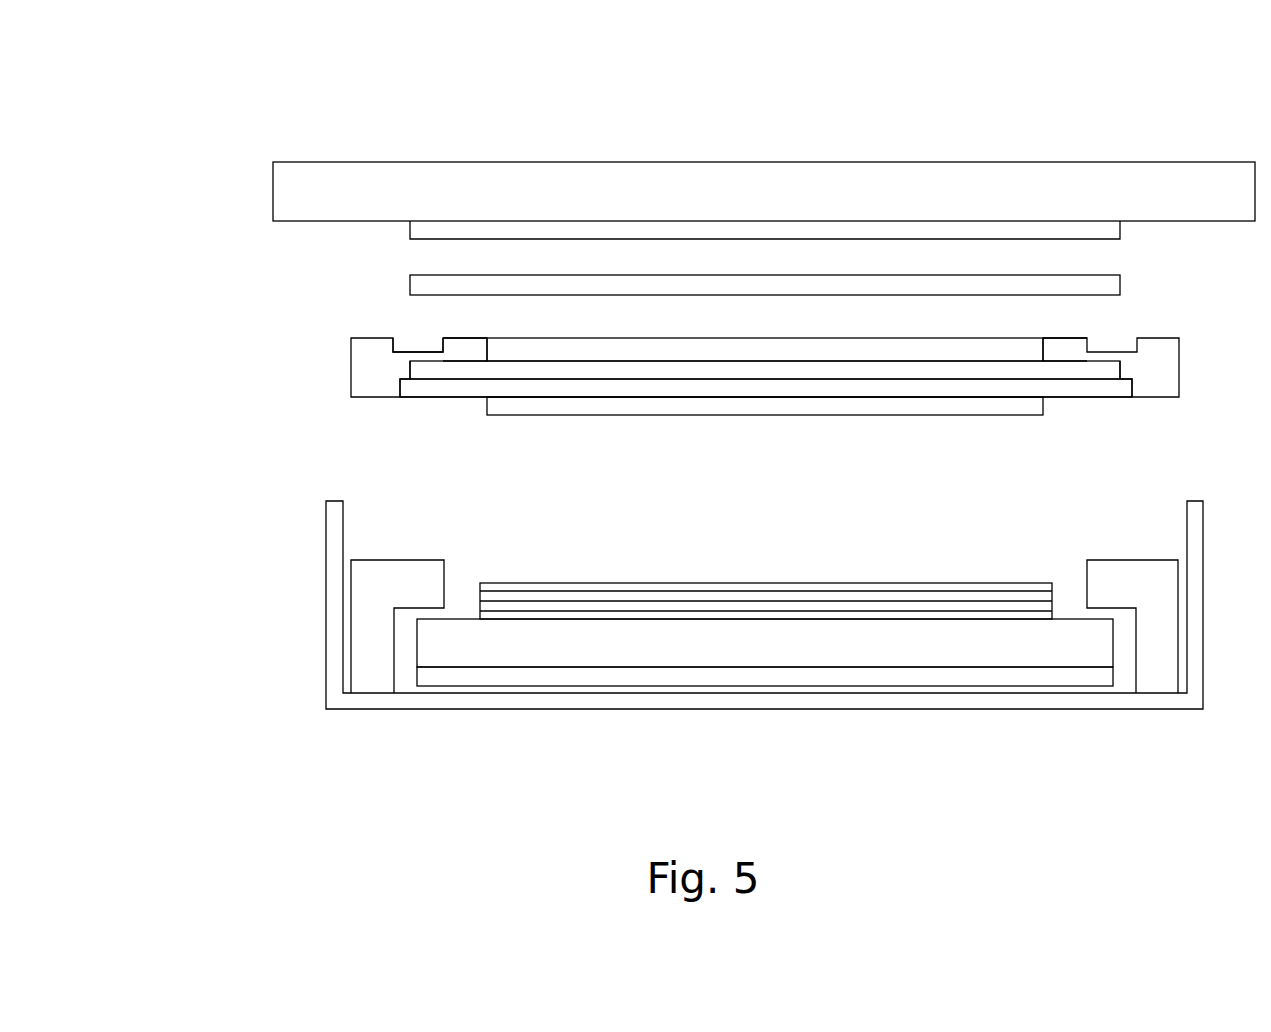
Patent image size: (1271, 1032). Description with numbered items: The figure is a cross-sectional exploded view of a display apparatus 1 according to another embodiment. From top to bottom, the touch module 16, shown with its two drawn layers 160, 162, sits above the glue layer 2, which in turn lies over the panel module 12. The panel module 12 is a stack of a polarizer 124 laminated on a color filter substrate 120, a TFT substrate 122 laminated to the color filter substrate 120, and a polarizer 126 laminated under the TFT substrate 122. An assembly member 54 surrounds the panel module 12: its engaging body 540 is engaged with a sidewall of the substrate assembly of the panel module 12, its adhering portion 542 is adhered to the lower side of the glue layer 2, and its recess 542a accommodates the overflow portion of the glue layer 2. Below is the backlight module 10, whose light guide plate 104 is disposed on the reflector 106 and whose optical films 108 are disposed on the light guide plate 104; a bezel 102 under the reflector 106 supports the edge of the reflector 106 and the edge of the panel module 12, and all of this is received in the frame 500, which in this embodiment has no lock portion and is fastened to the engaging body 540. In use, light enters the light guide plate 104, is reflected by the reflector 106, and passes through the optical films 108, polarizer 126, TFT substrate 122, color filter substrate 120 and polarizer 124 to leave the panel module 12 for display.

The display apparatus 1 is at (253, 118).
The glue layer 2 is at (582, 285).
The backlight module 10 is at (708, 706).
The panel module 12 is at (635, 468).
The touch module 16 is at (928, 97).
The assembly member 54 is at (1158, 350).
The bezel 102 is at (368, 673).
The light guide plate 104 is at (1067, 647).
The reflector 106 is at (983, 677).
The optical films 108 is at (553, 572).
The color filter substrate 120 is at (920, 370).
The TFT substrate 122 is at (835, 390).
The polarizer 124 is at (745, 352).
The polarizer 126 is at (665, 405).
The cover plate 160 is at (926, 183).
The adhesive layer 162 is at (1032, 230).
The frame 500 is at (333, 673).
The engaging body 540 is at (375, 390).
The adhering portion 542 is at (467, 352).
The recess 542a is at (418, 352).